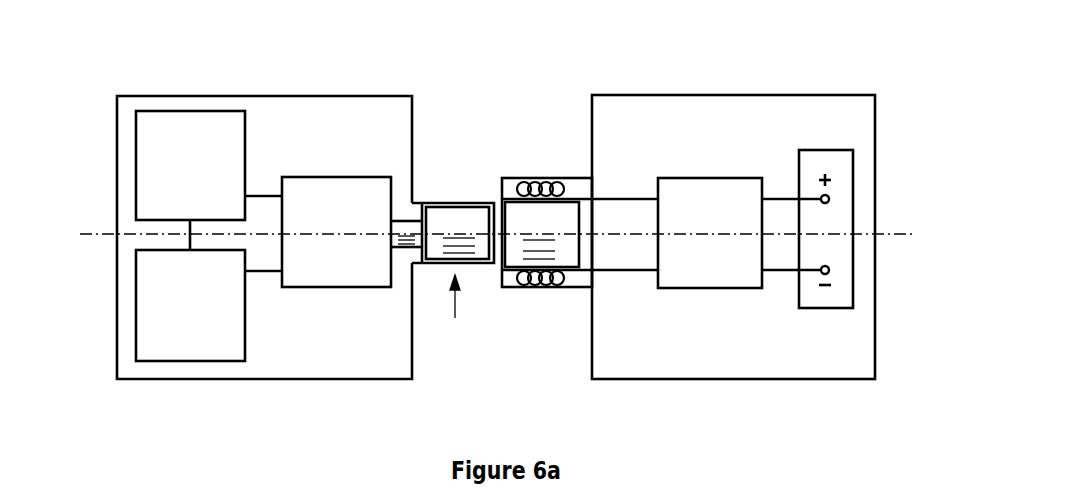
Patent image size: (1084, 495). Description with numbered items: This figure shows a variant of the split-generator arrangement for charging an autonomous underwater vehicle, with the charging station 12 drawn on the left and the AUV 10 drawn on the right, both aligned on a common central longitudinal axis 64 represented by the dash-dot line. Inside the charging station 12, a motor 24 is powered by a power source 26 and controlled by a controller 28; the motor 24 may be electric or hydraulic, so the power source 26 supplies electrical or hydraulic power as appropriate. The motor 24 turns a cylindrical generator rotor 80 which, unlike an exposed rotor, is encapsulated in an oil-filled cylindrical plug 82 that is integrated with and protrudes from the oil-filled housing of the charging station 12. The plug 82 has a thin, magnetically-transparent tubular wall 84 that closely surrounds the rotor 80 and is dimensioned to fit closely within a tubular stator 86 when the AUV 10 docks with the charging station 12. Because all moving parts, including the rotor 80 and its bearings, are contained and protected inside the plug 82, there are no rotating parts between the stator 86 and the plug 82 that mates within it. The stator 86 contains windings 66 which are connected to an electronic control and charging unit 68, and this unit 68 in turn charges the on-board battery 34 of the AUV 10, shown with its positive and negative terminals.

The AUV 10 is at (831, 94).
The charging station 12 is at (177, 96).
The motor 24 is at (323, 219).
The power source 26 is at (177, 171).
The controller 28 is at (177, 311).
The on-board battery 34 is at (845, 247).
The common central longitudinal axis 64 is at (88, 233).
The windings 66 is at (533, 287).
The electronic control and charging unit 68 is at (698, 219).
The rotor 80 is at (462, 217).
The oil-filled cylindrical plug 82 is at (455, 312).
The tubular wall 84 is at (437, 203).
The tubular stator 86 is at (535, 178).